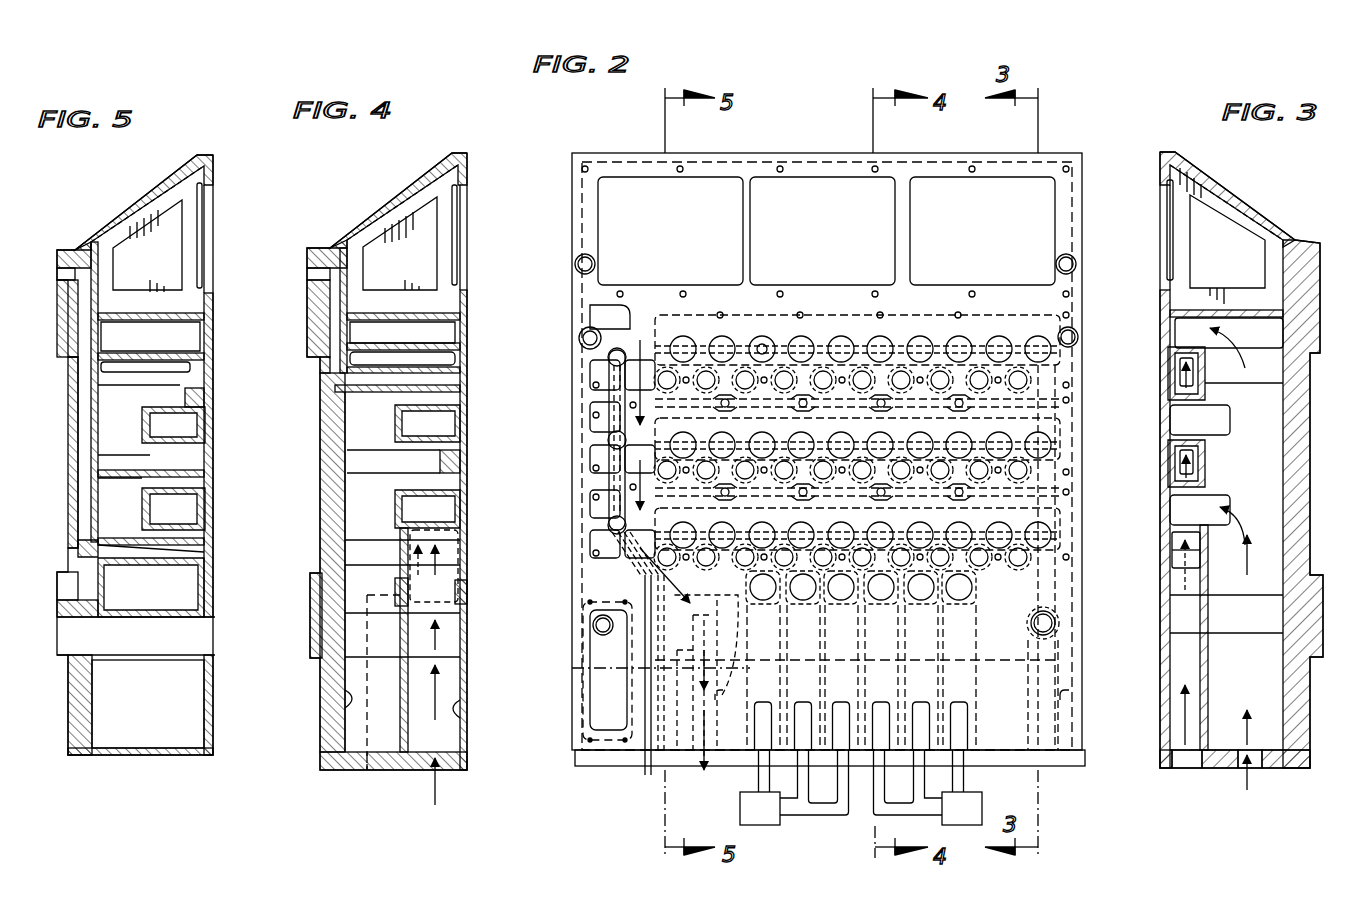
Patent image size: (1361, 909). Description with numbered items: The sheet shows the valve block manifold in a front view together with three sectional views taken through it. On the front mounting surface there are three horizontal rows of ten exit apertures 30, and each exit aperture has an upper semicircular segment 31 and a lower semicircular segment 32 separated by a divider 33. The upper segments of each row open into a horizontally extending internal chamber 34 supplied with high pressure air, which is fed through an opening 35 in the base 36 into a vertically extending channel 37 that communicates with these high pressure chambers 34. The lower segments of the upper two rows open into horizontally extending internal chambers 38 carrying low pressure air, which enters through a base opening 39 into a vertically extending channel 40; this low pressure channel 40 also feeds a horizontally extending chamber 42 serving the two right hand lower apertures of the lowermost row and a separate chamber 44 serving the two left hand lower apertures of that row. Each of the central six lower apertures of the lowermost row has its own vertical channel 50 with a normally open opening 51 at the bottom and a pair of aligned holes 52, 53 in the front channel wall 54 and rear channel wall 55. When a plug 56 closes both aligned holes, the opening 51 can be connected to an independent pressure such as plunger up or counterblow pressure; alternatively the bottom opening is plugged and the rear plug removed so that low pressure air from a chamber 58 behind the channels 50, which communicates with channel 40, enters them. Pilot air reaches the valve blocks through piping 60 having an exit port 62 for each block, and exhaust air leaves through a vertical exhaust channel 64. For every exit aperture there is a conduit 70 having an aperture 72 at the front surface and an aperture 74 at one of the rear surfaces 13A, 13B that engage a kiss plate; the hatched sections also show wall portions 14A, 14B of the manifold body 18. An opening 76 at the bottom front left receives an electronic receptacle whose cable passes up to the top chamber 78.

In FIG. 5, the rear surface 13A is at (60, 250).
In FIG. 4, the rear surface 13A is at (304, 244).
In FIG. 5, the rear surface 13B is at (62, 660).
In FIG. 4, the rear surface 13B is at (310, 610).
In FIG. 5, the upper wall section 14A is at (56, 330).
In FIG. 5, the lower wall section 14B is at (58, 636).
In FIG. 2, the manifold body 18 is at (926, 145).
In FIG. 3, the manifold body 18 is at (1236, 192).
In FIG. 2, the exit aperture 30 is at (907, 315).
In FIG. 2, the upper semi circular segment 31 is at (762, 340).
In FIG. 2, the lower semi circular segment 32 is at (750, 334).
In FIG. 2, the divider 33 is at (770, 336).
In FIG. 5, the internal chamber 34 is at (153, 426).
In FIG. 4, the internal chamber 34 is at (410, 422).
In FIG. 2, the internal chamber 34 is at (992, 335).
In FIG. 3, the internal chamber 34 is at (1265, 338).
In FIG. 3, the opening 35 is at (1249, 782).
In FIG. 3, the base 36 is at (1300, 760).
In FIG. 3, the vertically extending channel 37 is at (1283, 527).
In FIG. 5, the internal chamber 38 is at (191, 360).
In FIG. 4, the internal chamber 38 is at (432, 384).
In FIG. 2, the internal chamber 38 is at (640, 394).
In FIG. 3, the internal chamber 38 is at (1170, 362).
In FIG. 4, the base opening 39 is at (367, 770).
In FIG. 3, the base opening 39 is at (1183, 768).
In FIG. 3, the vertically extending channel 40 is at (1209, 656).
In FIG. 2, the horizontally extending chamber 42 is at (1012, 562).
In FIG. 3, the horizontally extending chamber 42 is at (1172, 562).
In FIG. 2, the chamber 44 is at (650, 568).
In FIG. 4, the vertical channel 50 is at (462, 714).
In FIG. 2, the vertical channel 50 is at (857, 660).
In FIG. 4, the opening 51 is at (436, 790).
In FIG. 2, the opening 51 is at (968, 760).
In FIG. 4, the hole 52 is at (460, 602).
In FIG. 4, the hole 53 is at (414, 586).
In FIG. 4, the front channel wall 54 is at (464, 650).
In FIG. 4, the rear channel wall 55 is at (404, 674).
In FIG. 4, the plug 56 is at (392, 592).
In FIG. 4, the chamber 58 is at (346, 710).
In FIG. 2, the piping 60 is at (610, 500).
In FIG. 2, the exit port 62 is at (584, 354).
In FIG. 2, the vertical exhaust channel 64 is at (590, 318).
In FIG. 5, the conduit 70 is at (70, 408).
In FIG. 4, the conduit 70 is at (307, 318).
In FIG. 5, the aperture 72 is at (206, 480).
In FIG. 4, the aperture 72 is at (456, 379).
In FIG. 5, the aperture 74 is at (60, 282).
In FIG. 4, the aperture 74 is at (307, 272).
In FIG. 2, the opening 76 is at (595, 687).
In FIG. 2, the top chamber 78 is at (826, 231).